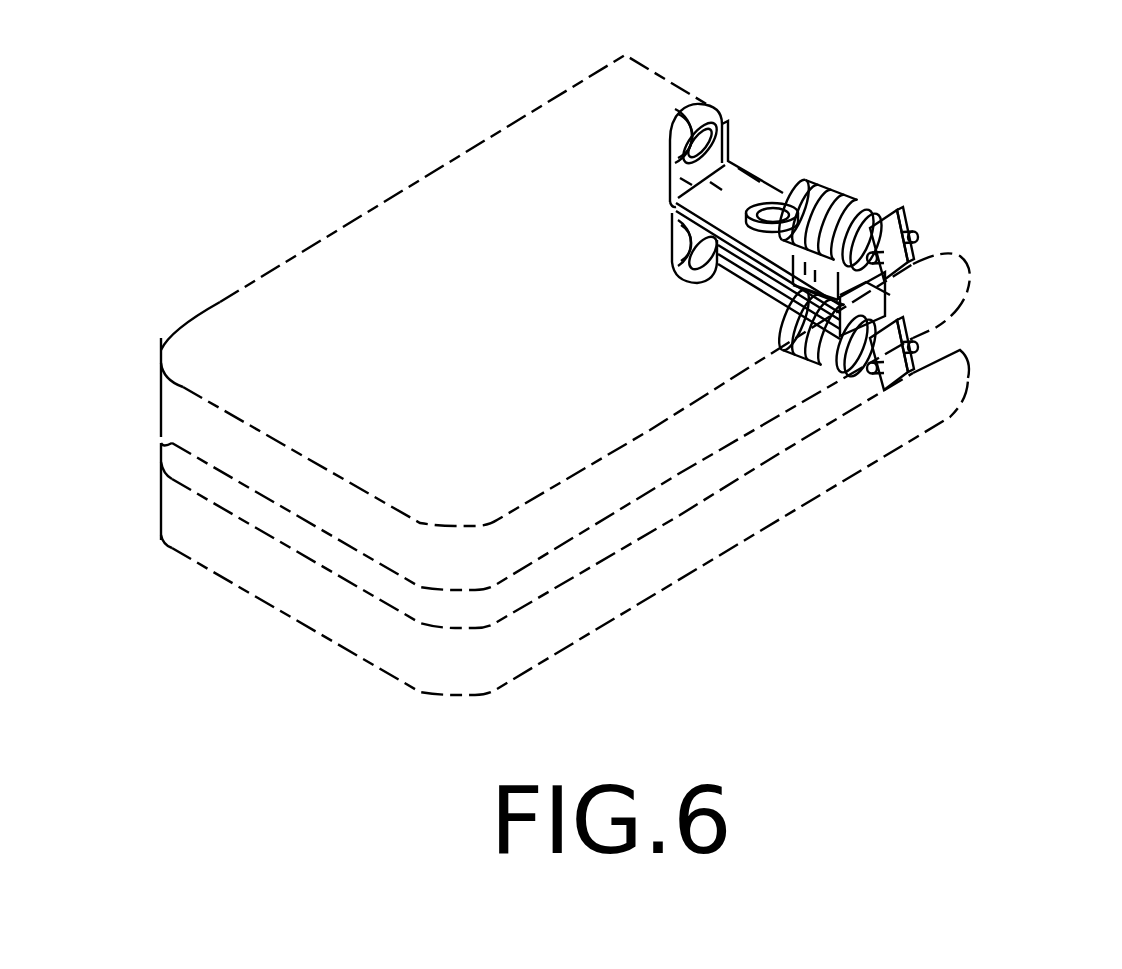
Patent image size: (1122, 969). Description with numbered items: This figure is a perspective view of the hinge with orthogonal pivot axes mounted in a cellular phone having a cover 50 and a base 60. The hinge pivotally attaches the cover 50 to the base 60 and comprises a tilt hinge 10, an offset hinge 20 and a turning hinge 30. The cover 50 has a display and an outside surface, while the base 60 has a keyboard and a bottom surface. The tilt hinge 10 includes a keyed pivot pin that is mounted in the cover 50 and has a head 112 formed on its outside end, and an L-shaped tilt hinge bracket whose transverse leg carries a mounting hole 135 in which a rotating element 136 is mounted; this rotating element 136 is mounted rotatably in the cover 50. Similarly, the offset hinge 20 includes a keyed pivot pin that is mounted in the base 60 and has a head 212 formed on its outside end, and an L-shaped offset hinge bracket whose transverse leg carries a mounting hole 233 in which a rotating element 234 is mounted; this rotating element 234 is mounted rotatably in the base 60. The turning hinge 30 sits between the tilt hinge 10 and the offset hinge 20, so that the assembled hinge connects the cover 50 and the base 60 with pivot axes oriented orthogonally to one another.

The tilt hinge 10 is at (862, 182).
The offset hinge 20 is at (823, 364).
The turning hinge 30 is at (770, 200).
The cover 50 is at (333, 241).
The base 60 is at (610, 605).
The head 112 is at (893, 227).
The mounting hole 135 is at (722, 125).
The rotating element 136 is at (680, 112).
The head 212 is at (912, 362).
The mounting hole 233 is at (697, 270).
The rotating element 234 is at (668, 250).